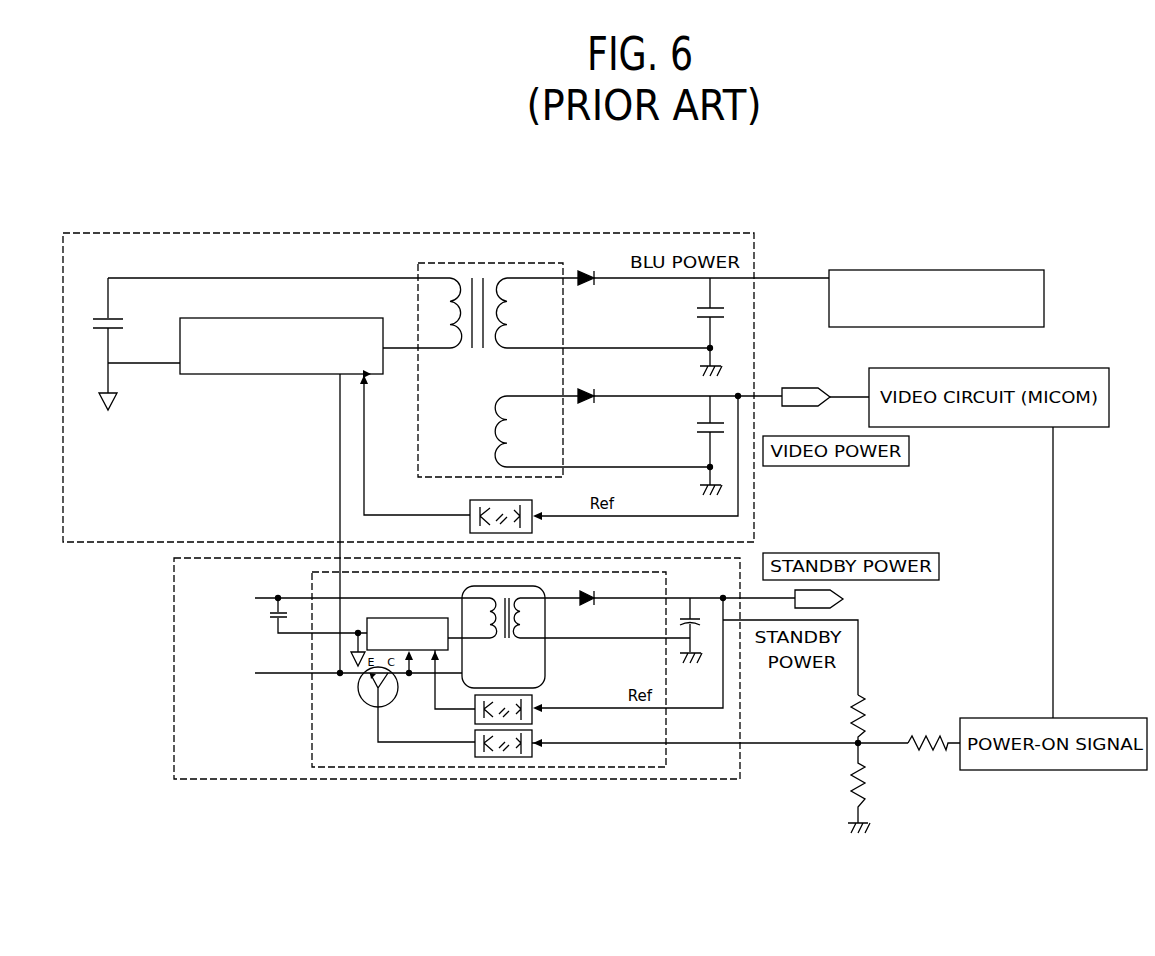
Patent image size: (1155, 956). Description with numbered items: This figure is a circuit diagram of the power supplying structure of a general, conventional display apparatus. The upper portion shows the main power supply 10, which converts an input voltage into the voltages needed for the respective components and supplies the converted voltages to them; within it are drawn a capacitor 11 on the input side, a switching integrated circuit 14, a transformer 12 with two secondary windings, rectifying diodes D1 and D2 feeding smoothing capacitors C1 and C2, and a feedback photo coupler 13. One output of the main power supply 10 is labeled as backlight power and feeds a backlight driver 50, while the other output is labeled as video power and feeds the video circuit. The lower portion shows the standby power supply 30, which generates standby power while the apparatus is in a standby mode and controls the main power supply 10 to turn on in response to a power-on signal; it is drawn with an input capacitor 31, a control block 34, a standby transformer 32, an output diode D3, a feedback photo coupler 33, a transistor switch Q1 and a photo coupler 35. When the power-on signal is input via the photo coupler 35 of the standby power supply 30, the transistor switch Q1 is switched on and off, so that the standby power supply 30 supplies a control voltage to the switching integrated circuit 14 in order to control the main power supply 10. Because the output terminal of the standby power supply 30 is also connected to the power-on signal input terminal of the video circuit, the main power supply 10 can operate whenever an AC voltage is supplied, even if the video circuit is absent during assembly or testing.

The main power supply 10 is at (328, 233).
The smoothing capacitor 11 is at (108, 318).
The main transformer 12 is at (490, 263).
The photo coupler (feedback) 13 is at (466, 505).
The switching integrated circuit 14 is at (262, 375).
The standby power supply 30 is at (172, 672).
The capacitor 31 is at (283, 616).
The standby transformer 32 is at (545, 650).
The photo coupler (feedback) 33 is at (534, 694).
The switching control IC 34 is at (425, 618).
The photo coupler 35 is at (505, 757).
The backlight driver 50 is at (848, 270).
The transistor switch Q1 is at (357, 693).
The diode D1 is at (587, 267).
The diode D2 is at (587, 386).
The diode D3 is at (601, 591).
The capacitor C1 is at (698, 327).
The capacitor C2 is at (698, 445).